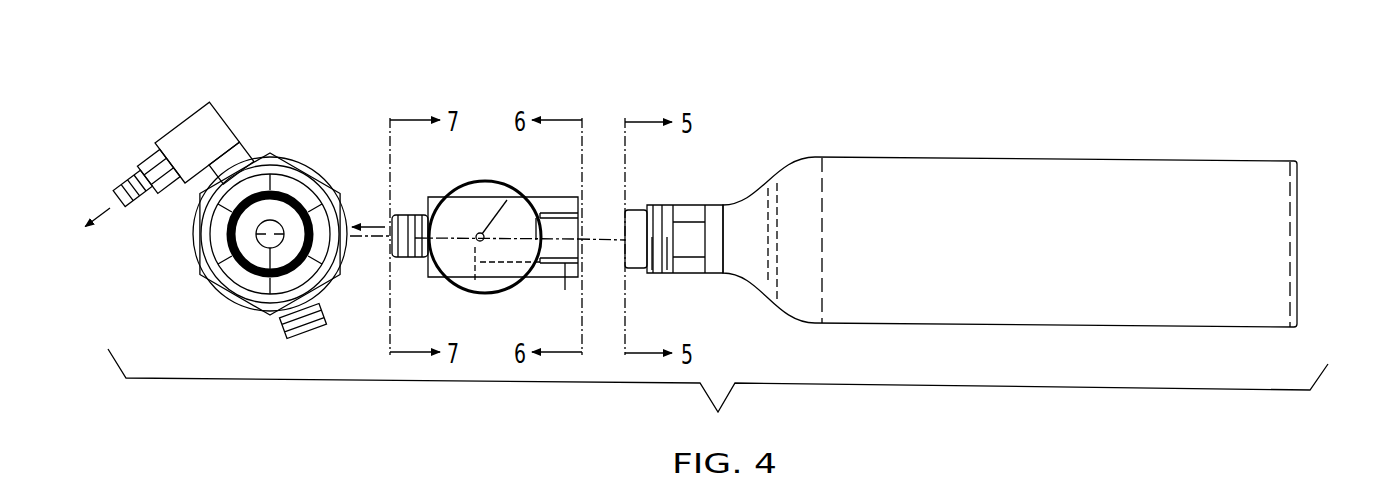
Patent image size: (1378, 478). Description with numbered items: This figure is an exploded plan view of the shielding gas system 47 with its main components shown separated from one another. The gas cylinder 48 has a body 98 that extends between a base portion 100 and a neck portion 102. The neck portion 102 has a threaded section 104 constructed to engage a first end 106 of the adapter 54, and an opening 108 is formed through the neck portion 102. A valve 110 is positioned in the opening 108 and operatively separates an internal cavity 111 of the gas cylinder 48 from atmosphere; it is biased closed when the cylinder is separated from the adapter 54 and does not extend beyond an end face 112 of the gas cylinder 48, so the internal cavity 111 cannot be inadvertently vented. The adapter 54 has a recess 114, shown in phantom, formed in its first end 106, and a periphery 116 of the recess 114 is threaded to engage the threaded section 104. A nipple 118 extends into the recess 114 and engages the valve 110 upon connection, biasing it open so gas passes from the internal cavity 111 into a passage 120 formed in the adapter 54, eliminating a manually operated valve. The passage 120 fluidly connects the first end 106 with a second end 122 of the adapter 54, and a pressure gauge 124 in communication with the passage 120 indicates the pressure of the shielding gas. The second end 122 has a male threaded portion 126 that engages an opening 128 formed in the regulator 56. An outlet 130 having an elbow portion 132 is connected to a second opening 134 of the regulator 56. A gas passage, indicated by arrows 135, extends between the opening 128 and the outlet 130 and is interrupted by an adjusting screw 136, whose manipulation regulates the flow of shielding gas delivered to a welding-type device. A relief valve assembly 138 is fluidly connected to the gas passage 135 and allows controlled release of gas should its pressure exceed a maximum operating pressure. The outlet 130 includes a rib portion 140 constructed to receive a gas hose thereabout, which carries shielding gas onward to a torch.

The shielding gas system 47 is at (822, 100).
The gas cylinder 48 is at (1032, 132).
The adapter 54 is at (507, 178).
The regulator 56 is at (299, 148).
The body 98 is at (1062, 230).
The base portion 100 is at (1288, 150).
The neck portion 102 is at (768, 162).
The threaded section 104 is at (660, 207).
The first end 106 is at (573, 194).
The opening 108 is at (616, 260).
The valve 110 is at (617, 236).
The internal cavity 111 is at (887, 217).
The end face 112 is at (628, 252).
The recess 114 is at (573, 190).
The periphery 116 is at (561, 280).
The nipple 118 is at (534, 198).
The passage 120 is at (466, 292).
The second end 122 is at (405, 260).
The pressure gauge 124 is at (492, 190).
The threaded portion 126 is at (408, 208).
The opening 128 is at (342, 263).
The outlet 130 is at (140, 132).
The elbow portion 132 is at (182, 133).
The second opening 134 is at (246, 148).
The gas passage 135 is at (103, 210).
The adjusting screw 136 is at (237, 290).
The relief valve assembly 138 is at (307, 345).
The rib portion 140 is at (132, 180).